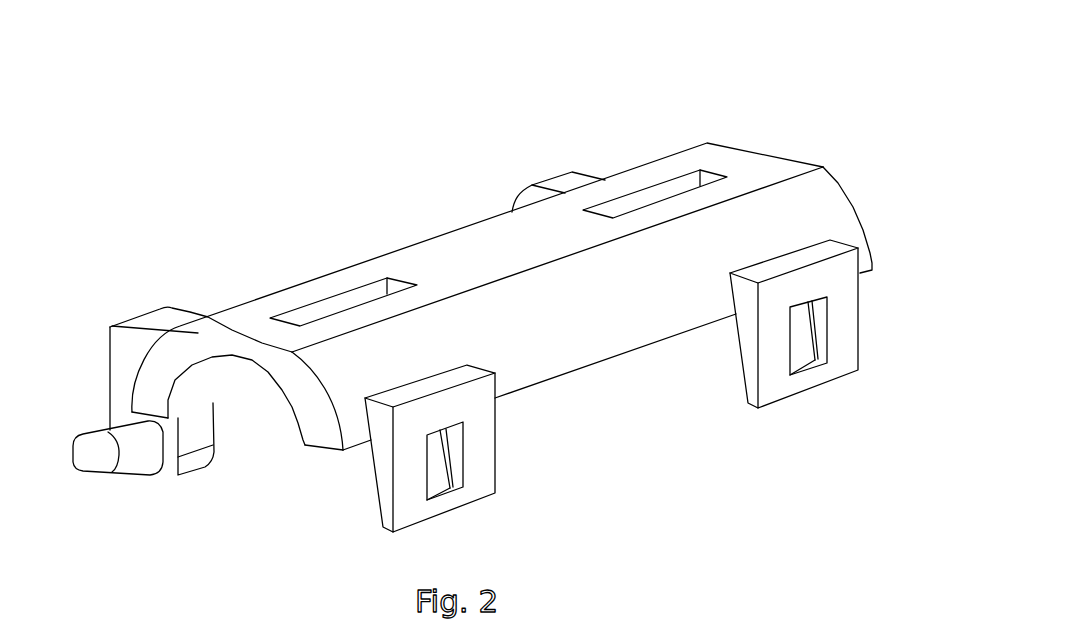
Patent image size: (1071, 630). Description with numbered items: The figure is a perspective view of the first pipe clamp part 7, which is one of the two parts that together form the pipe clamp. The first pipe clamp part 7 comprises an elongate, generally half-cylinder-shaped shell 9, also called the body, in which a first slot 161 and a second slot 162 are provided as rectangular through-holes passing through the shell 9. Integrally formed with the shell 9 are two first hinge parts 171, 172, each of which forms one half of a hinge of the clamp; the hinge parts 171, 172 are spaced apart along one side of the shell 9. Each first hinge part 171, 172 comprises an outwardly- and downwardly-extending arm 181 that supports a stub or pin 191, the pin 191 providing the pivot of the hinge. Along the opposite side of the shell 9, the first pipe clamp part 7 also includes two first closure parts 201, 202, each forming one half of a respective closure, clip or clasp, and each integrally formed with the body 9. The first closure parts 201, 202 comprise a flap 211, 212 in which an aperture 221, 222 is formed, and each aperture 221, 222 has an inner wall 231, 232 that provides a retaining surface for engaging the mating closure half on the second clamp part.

The first pipe clamp part 7 is at (750, 73).
The shell 9 is at (307, 420).
The first slot 161 is at (343, 286).
The second slot 162 is at (655, 177).
The first hinge part 171 is at (201, 292).
The first hinge part 172 is at (569, 148).
The arm 181 is at (134, 358).
The pin 191 is at (92, 465).
The first closure part 201 is at (472, 454).
The first closure part 202 is at (835, 330).
The flap 211 is at (447, 457).
The flap 212 is at (808, 334).
The aperture 221 is at (469, 461).
The aperture 222 is at (832, 336).
The inner wall 231 is at (426, 458).
The inner wall 232 is at (792, 332).